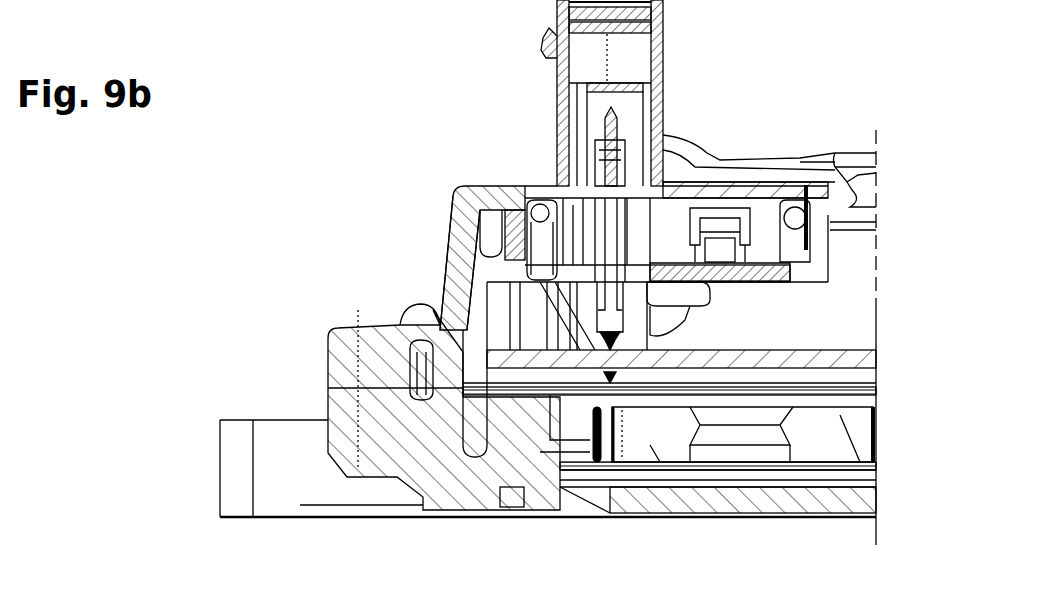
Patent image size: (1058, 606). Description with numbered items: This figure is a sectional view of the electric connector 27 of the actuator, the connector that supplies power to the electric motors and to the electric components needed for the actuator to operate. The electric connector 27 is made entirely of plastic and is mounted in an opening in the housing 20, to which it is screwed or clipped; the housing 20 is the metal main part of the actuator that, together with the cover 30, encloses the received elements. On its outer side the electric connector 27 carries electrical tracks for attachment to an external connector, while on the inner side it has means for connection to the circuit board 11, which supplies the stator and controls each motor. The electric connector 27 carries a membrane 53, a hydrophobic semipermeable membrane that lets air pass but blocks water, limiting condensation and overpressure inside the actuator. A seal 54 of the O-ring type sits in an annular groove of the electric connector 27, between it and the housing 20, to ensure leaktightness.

The circuit board 11 is at (848, 356).
The housing 20 is at (455, 292).
The electric connector 27 is at (553, 193).
The cover 30 is at (447, 467).
The membrane 53 is at (722, 218).
The seal 54 is at (538, 216).